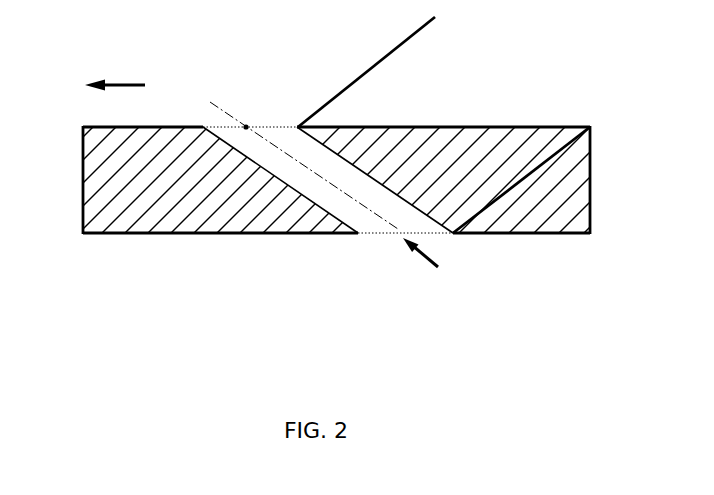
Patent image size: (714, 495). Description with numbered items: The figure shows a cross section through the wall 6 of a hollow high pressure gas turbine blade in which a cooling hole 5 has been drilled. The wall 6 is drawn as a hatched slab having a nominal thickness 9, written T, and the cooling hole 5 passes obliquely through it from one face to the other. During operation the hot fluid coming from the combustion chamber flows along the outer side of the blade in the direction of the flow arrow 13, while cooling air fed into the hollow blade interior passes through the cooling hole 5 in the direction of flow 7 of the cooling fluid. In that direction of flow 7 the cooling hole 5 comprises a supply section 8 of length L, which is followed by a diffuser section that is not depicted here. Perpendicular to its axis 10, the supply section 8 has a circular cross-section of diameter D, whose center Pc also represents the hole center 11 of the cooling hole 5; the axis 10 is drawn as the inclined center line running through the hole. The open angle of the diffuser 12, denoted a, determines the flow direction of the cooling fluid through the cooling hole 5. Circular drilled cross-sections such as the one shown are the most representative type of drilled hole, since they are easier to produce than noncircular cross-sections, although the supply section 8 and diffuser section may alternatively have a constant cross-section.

The cooling hole 5 is at (373, 237).
The wall 6 is at (222, 234).
The direction of flow 7 is at (437, 257).
The supply section 8 is at (579, 119).
The nominal thickness 9 is at (32, 127).
The axis 10 is at (283, 126).
The hole center 11 is at (246, 124).
The open angle of the diffuser 12 is at (222, 112).
The flow arrow 13 is at (115, 68).